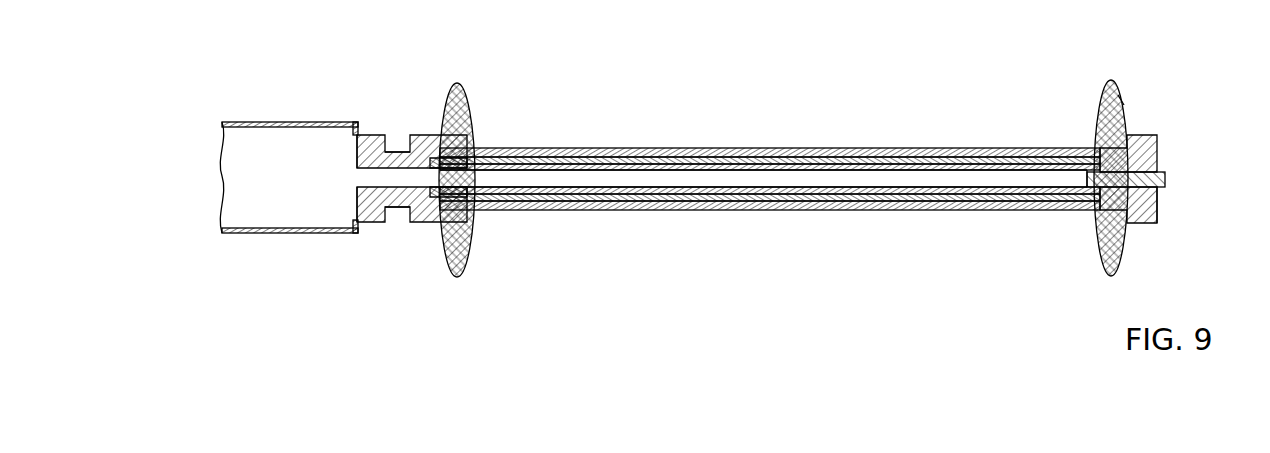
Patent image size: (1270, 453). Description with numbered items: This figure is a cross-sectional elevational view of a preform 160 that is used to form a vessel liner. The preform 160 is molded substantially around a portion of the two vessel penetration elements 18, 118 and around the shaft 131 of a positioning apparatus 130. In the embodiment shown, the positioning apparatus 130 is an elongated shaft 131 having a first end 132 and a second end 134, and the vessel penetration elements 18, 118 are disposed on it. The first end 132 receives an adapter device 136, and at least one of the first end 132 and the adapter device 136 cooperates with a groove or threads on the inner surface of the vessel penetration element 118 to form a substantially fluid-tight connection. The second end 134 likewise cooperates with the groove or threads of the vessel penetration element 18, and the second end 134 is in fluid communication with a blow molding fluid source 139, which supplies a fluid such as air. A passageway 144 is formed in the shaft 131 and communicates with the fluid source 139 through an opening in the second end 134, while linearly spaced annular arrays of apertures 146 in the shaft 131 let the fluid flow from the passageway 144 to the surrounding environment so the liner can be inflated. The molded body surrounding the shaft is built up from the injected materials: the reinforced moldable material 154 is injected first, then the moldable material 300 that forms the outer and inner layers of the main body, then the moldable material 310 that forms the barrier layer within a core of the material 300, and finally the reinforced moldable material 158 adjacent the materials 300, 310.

The vessel penetration element 18 is at (412, 135).
The vessel penetration element 118 is at (1155, 135).
The positioning apparatus 130 is at (368, 222).
The elongated shaft 131 is at (582, 148).
The first end 132 is at (1166, 175).
The second end 134 is at (390, 208).
The adapter device 136 is at (1158, 195).
The blow molding fluid source 139 is at (323, 216).
The passageway 144 is at (757, 178).
The apertures 146 is at (693, 192).
The reinforced moldable material 154 is at (462, 82).
The reinforced moldable material 158 is at (1107, 80).
The preform 160 is at (1120, 105).
The moldable material 300 is at (936, 150).
The moldable material 310 is at (872, 150).